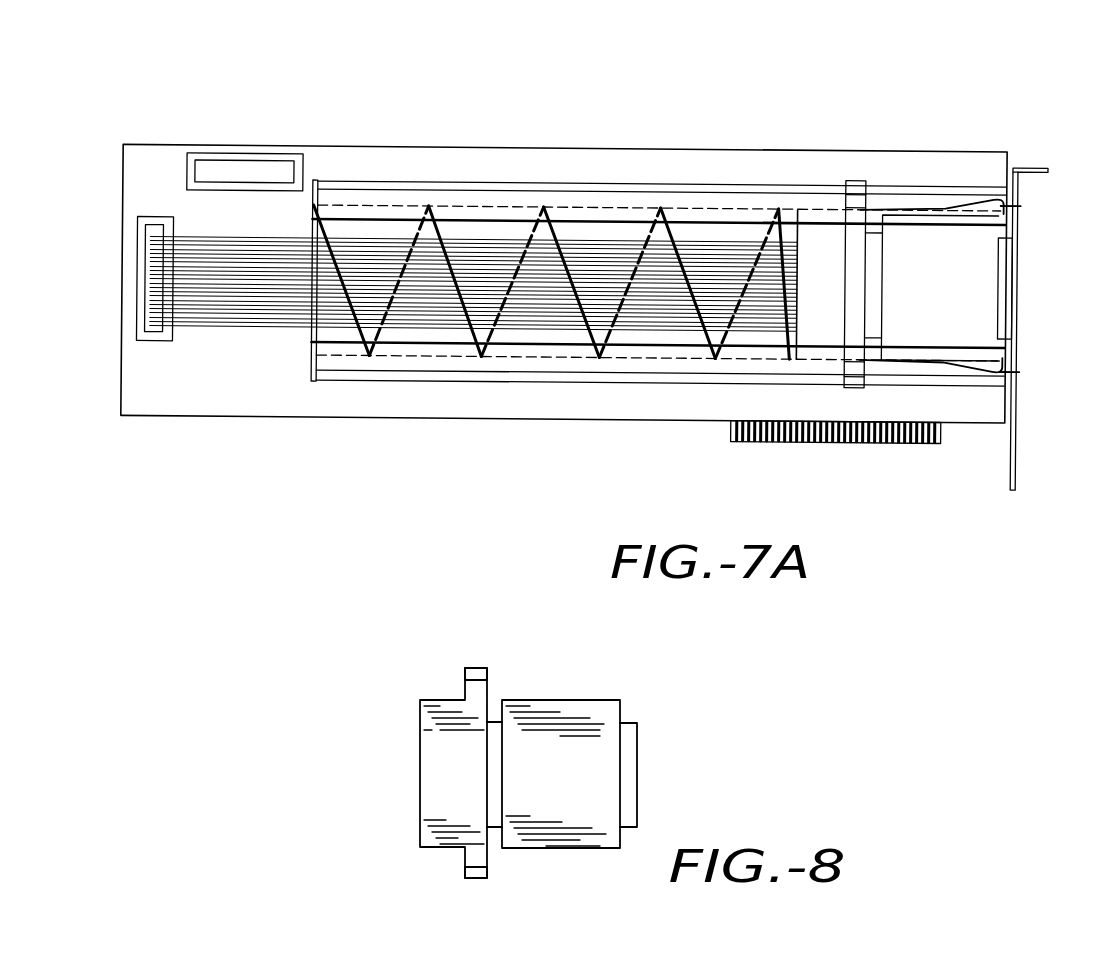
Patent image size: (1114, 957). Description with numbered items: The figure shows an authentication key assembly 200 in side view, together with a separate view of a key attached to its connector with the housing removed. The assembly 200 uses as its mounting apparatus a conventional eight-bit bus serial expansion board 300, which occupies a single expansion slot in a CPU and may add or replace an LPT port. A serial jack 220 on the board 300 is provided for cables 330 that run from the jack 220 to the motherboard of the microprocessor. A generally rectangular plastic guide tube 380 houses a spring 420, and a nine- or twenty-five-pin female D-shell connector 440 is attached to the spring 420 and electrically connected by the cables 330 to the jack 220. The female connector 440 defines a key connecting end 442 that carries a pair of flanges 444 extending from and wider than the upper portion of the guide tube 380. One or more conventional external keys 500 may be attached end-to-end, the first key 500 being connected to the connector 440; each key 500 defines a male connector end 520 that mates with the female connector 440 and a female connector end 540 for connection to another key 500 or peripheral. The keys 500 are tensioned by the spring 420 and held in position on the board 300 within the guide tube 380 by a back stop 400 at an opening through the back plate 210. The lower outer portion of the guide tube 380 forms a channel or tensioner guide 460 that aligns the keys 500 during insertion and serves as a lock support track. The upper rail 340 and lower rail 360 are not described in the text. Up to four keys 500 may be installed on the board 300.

In FIG. 7A, the authentication key assembly 200 is at (527, 108).
In FIG. 7A, the back plate 210 is at (1017, 473).
In FIG. 7A, the RS-232 jack 220 is at (157, 218).
In FIG. 7A, the expansion board 300 is at (242, 370).
In FIG. 7A, the cables 330 is at (210, 328).
In FIG. 7A, the upper housing rail 340 is at (893, 186).
In FIG. 7A, the lower housing 360 is at (580, 372).
In FIG. 7A, the plastic guide tube 380 is at (582, 203).
In FIG. 7A, the back stop 400 is at (982, 190).
In FIG. 7A, the spring 420 is at (404, 204).
In FIG. 7A, the female connector 440 is at (822, 238).
In FIG. 8, the female connector 440 is at (473, 768).
In FIG. 7A, the key connecting end 442 is at (866, 290).
In FIG. 8, the flanges 444 is at (476, 680).
In FIG. 7A, the tensioner guide 460 is at (410, 383).
In FIG. 7A, the key 500 is at (918, 442).
In FIG. 8, the key 500 is at (568, 742).
In FIG. 8, the male connector end 520 is at (495, 735).
In FIG. 8, the female connector end 540 is at (631, 768).